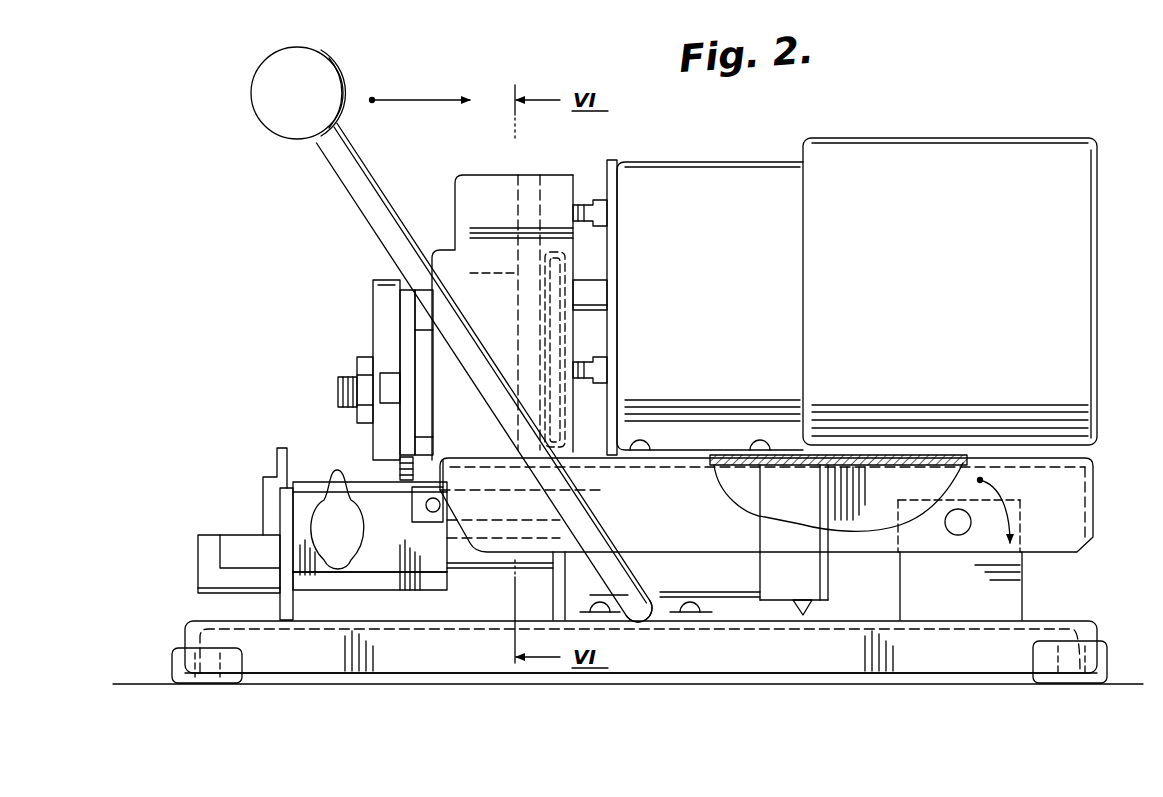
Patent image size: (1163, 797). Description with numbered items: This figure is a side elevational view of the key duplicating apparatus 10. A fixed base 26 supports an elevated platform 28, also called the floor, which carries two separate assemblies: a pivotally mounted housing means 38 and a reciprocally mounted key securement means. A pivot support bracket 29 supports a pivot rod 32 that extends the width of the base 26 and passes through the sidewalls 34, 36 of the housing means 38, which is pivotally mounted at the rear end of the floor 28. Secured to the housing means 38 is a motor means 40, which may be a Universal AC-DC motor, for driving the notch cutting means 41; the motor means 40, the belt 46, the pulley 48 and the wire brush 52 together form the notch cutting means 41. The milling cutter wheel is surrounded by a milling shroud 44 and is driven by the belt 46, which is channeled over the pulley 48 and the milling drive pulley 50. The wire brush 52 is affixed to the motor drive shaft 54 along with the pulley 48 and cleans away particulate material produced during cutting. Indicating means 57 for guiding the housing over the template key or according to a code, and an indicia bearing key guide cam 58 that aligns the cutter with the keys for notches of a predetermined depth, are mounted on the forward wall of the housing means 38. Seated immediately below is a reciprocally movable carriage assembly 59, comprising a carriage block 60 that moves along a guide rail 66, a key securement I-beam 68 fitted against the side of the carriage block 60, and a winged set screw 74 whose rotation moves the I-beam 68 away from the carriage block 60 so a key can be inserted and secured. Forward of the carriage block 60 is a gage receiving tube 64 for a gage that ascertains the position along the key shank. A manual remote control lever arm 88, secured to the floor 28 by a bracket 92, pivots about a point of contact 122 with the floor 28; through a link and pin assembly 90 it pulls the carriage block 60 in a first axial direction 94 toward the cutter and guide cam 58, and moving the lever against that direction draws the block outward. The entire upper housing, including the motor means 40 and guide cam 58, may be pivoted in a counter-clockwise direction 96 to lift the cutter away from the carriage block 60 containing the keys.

The key duplicating apparatus 10 is at (797, 115).
The fixed base 26 is at (641, 655).
The elevated platform 28 is at (220, 620).
The pivot support bracket 29 is at (995, 592).
The pivot rod 32 is at (955, 525).
The sidewall 34 is at (683, 478).
The sidewall 36 is at (885, 480).
The pivotally mounted housing means 38 is at (1060, 522).
The motor means 40 is at (1042, 190).
The notch cutting means 41 is at (365, 277).
The milling shroud 44 is at (388, 320).
The belt 46 is at (557, 343).
The pulley 48 is at (572, 268).
The milling drive pulley 50 is at (570, 412).
The wire brush 52 is at (533, 208).
The motor drive shaft 54 is at (600, 295).
The indicating means 57 is at (375, 455).
The indicia bearing key guide cam 58 is at (405, 395).
The carriage assembly 59 is at (250, 480).
The carriage block 60 is at (425, 580).
The gage receiving tube 64 is at (205, 548).
The guide rail 66 is at (502, 560).
The key securement I-beam 68 is at (370, 545).
The winged set screw 74 is at (330, 520).
The manual remote control lever arm 88 is at (332, 157).
The link and pin assembly 90 is at (492, 495).
The bracket 92 is at (665, 590).
The first axial direction 94 is at (412, 100).
The counter-clockwise direction 96 is at (995, 492).
The point of contact 122 is at (645, 620).